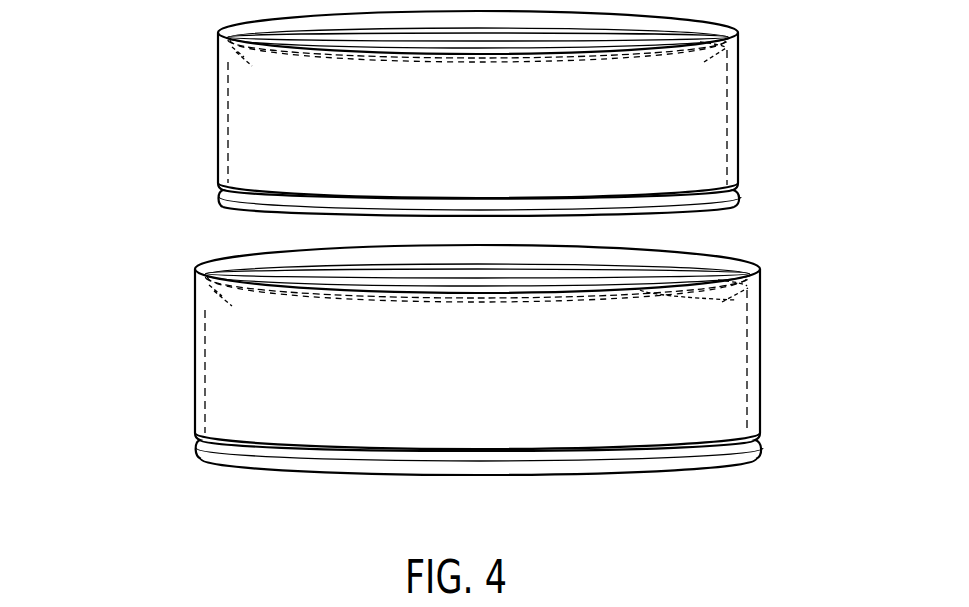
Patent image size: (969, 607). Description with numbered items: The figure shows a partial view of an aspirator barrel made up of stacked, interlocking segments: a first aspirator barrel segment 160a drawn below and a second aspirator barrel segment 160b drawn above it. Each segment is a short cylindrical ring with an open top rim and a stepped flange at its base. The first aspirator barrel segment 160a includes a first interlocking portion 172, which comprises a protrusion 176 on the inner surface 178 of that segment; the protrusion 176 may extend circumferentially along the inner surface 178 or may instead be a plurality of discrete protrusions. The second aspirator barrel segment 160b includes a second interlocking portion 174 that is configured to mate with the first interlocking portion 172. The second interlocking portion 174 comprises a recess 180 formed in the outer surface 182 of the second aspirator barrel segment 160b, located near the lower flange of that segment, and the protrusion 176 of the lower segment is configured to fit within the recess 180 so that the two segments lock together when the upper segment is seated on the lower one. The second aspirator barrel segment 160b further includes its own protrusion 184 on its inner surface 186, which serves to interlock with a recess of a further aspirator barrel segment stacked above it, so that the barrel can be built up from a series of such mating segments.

The second aspirator barrel segment 160b is at (451, 132).
The first aspirator barrel segment 160a is at (398, 360).
The first interlocking portion 172 is at (696, 330).
The second interlocking portion 174 is at (541, 217).
The protrusion 176 is at (745, 307).
The inner surface 178 is at (745, 370).
The recess 180 is at (735, 196).
The outer surface 182 is at (742, 113).
The protrusion 184 is at (718, 55).
The inner surface 186 is at (725, 110).